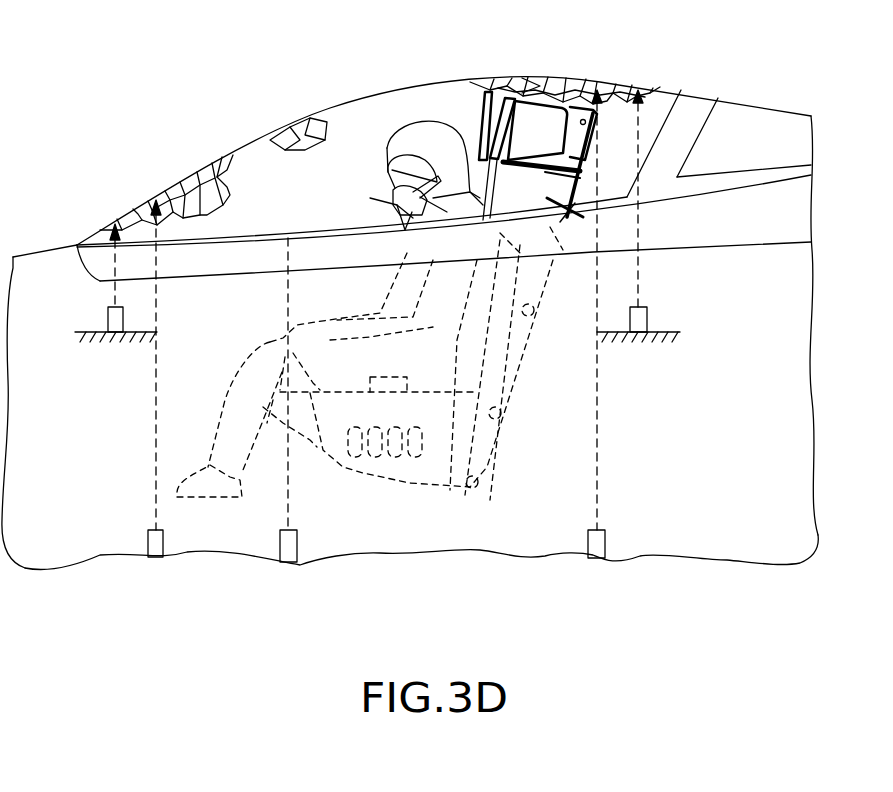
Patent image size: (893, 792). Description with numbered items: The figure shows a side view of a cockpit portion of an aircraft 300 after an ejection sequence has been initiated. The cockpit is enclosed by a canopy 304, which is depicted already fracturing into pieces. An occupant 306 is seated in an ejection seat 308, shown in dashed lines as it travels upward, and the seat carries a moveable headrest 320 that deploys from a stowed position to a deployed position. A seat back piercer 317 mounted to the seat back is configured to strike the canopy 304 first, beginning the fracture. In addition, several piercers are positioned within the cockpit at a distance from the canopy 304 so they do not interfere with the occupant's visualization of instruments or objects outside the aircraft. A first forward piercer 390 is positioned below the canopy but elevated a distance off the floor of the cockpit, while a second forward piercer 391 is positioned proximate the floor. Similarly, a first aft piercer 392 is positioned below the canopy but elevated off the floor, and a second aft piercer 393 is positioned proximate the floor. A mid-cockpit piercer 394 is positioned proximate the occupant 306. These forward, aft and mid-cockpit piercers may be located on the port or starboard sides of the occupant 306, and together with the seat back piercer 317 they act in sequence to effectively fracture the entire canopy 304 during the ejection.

The aircraft 300 is at (187, 131).
The canopy 304 is at (643, 90).
The occupant 306 is at (453, 212).
The ejection seat 308 is at (580, 217).
The seat back piercer 317 is at (525, 93).
The moveable headrest 320 is at (462, 107).
The first forward piercer 390 is at (112, 325).
The second forward piercer 391 is at (153, 550).
The first aft piercer 392 is at (645, 322).
The second aft piercer 393 is at (600, 548).
The mid-cockpit piercer 394 is at (290, 553).